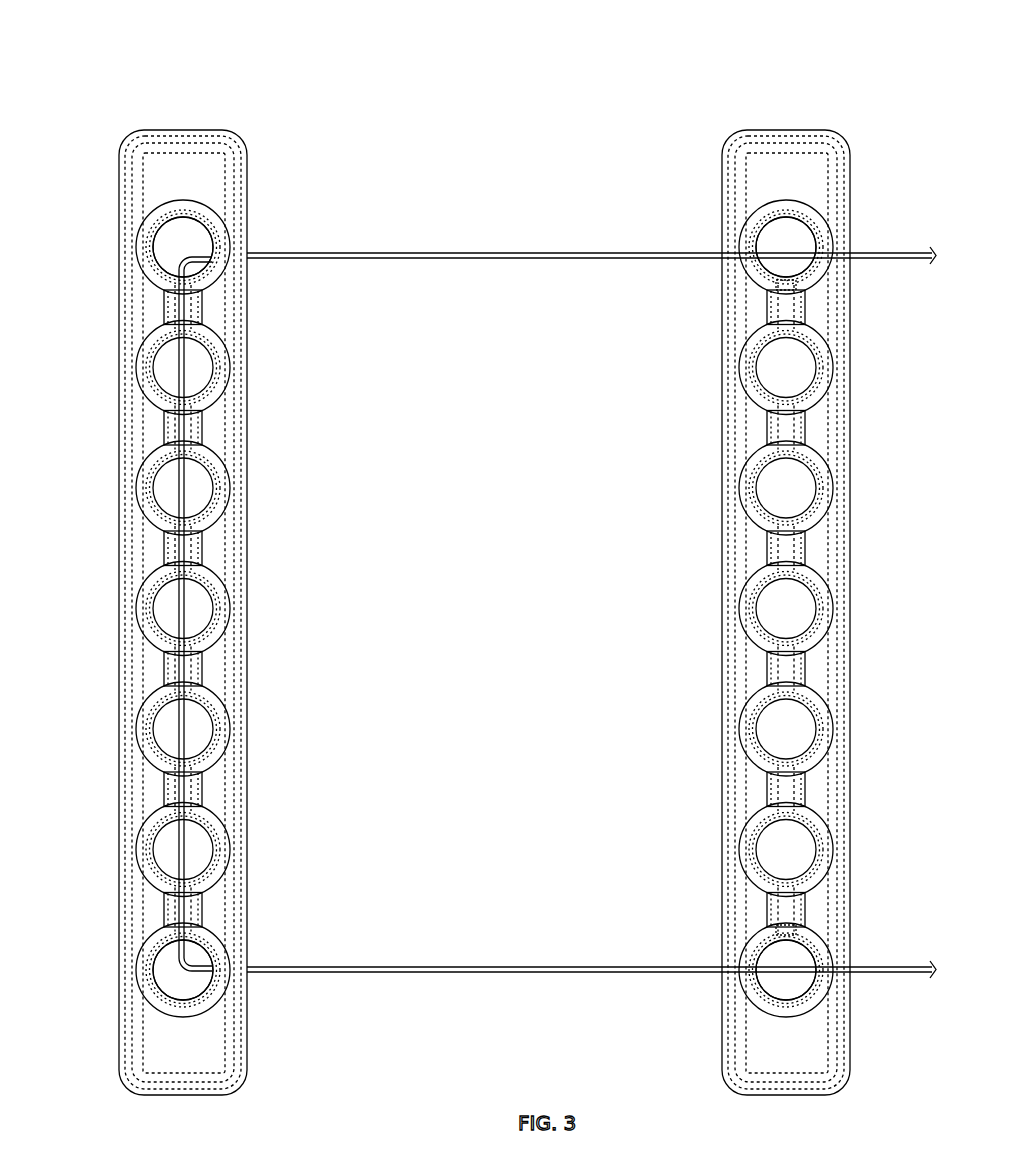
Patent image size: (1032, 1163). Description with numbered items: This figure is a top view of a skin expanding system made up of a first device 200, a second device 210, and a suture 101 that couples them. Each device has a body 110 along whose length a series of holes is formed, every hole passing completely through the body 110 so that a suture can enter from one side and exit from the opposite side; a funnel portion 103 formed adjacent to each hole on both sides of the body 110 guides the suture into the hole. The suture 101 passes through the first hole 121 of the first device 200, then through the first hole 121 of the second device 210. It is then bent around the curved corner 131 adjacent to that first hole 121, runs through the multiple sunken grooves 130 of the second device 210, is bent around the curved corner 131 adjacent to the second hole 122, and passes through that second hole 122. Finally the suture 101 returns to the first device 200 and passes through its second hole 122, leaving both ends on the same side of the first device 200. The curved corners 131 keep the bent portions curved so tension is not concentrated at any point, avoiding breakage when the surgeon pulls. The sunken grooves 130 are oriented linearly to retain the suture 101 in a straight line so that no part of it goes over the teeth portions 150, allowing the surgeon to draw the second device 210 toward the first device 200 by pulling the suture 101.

The suture 101 is at (433, 250).
The funnel portion 103 is at (150, 217).
The body 110 is at (212, 178).
The first hole 121 is at (190, 238).
The second hole 122 is at (165, 970).
The sunken groove 130 is at (162, 313).
The curved corner 131 is at (173, 283).
The teeth portion 150 is at (165, 427).
The first device 200 is at (778, 122).
The second device 210 is at (240, 118).